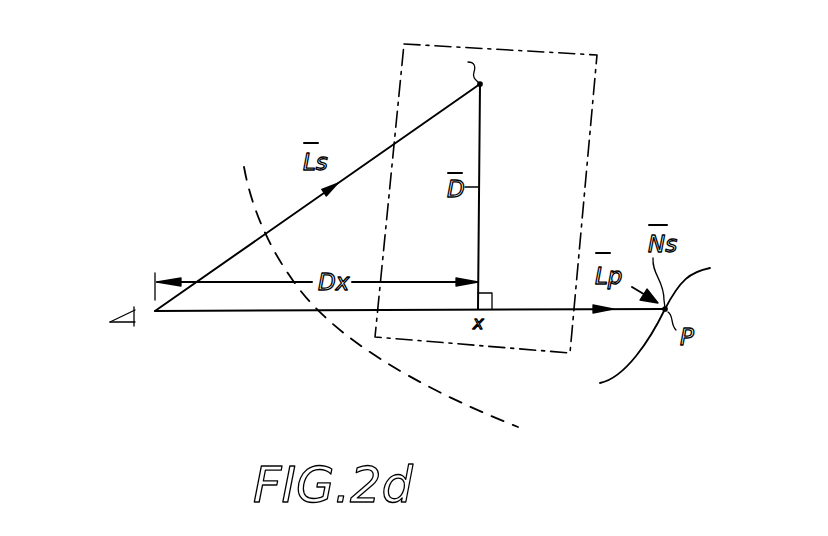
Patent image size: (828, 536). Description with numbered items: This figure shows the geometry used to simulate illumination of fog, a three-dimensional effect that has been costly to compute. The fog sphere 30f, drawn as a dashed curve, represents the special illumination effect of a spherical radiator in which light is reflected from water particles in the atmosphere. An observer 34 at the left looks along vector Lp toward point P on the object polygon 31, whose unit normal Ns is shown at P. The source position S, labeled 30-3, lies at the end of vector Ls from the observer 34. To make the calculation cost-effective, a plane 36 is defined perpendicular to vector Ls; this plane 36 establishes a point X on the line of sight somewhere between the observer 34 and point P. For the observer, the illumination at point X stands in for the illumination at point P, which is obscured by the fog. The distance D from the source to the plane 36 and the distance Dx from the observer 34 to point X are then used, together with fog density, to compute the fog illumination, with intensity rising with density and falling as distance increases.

The image point S on focal surface 30-3 is at (482, 84).
The plane 36 is at (481, 175).
The observer 34 is at (112, 326).
The fog sphere 30f is at (250, 200).
The object polygon 31 is at (633, 360).